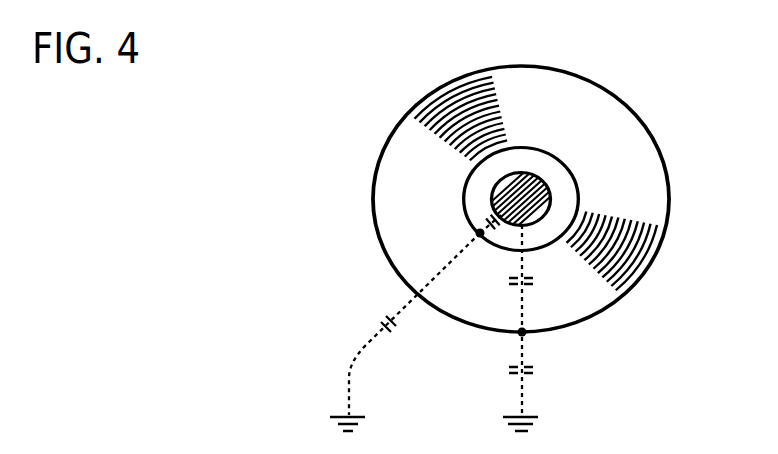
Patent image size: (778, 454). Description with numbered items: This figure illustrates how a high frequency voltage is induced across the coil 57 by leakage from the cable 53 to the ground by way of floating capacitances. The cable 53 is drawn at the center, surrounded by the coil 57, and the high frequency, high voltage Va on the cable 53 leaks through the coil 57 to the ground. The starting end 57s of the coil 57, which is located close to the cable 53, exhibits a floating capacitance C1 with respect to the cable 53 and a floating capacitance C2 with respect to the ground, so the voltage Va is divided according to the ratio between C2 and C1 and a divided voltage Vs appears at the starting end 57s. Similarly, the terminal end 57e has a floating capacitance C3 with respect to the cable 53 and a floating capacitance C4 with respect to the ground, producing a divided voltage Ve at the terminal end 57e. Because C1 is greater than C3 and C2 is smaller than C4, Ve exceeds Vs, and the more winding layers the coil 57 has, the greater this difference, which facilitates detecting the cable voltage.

The coil 57 is at (667, 180).
The cable 53 is at (540, 180).
The starting end of the coil 57s is at (480, 234).
The terminal end of the coil 57e is at (522, 332).
The floating capacitance C1 is at (467, 200).
The floating capacitance C2 is at (382, 321).
The floating capacitance C3 is at (537, 281).
The floating capacitance C4 is at (533, 367).